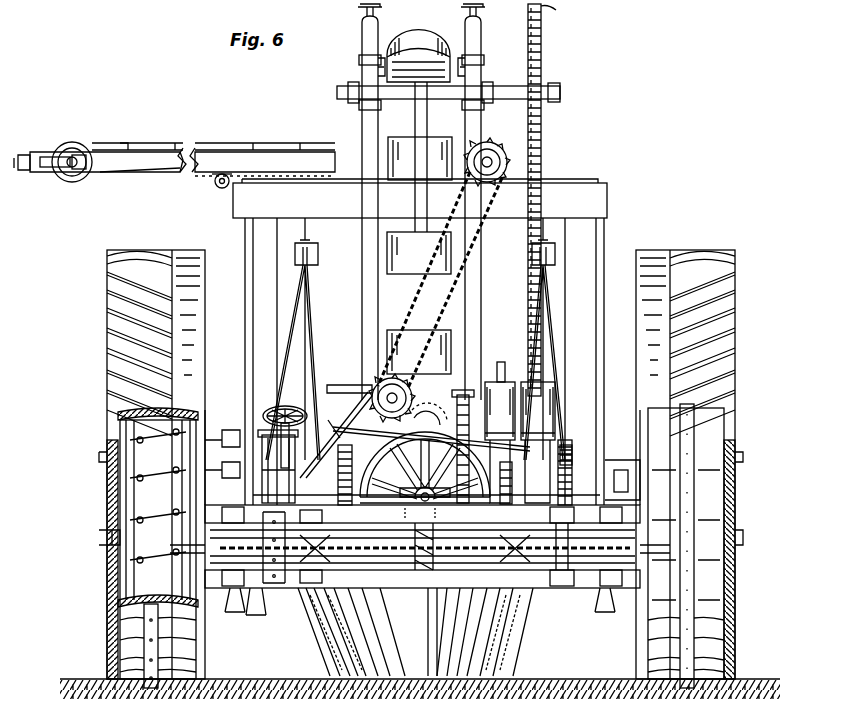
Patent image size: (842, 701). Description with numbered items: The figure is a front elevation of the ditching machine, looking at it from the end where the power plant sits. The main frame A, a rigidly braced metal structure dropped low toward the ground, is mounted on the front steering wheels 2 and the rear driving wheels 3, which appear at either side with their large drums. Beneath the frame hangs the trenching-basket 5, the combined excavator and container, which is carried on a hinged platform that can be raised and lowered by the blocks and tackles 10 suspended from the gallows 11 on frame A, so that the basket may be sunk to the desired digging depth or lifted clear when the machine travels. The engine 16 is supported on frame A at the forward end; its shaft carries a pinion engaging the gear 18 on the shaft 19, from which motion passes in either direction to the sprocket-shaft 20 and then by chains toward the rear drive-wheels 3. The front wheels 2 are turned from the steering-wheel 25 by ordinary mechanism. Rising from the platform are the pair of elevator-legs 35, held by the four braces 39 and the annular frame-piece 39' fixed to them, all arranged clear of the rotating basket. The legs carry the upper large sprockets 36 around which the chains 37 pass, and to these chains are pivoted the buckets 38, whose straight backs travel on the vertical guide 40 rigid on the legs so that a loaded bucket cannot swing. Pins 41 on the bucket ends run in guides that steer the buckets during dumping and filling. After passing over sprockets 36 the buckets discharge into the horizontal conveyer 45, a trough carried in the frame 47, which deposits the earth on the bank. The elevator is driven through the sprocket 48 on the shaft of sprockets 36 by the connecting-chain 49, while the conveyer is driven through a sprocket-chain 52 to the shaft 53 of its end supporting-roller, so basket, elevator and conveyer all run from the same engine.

The front steering wheels 2 is at (411, 546).
The rear driving wheels 3 is at (110, 618).
The trenching-basket 5 is at (415, 632).
The blocks and tackles 10 is at (308, 320).
The gallows 11 is at (420, 198).
The engine 16 is at (501, 378).
The gear 18 is at (568, 446).
The shaft 19 is at (552, 505).
The sprocket-shaft 20 is at (422, 482).
The steering-wheel 25 is at (256, 447).
The elevator-legs 35 is at (480, 322).
The upper large sprockets 36 is at (378, 62).
The chains 37 is at (363, 127).
The buckets 38 is at (428, 26).
The braces 39 is at (386, 398).
The annular frame-piece 39' is at (415, 413).
The vertical guide 40 is at (427, 125).
The pins 41 is at (387, 271).
The horizontal conveyer 45 is at (268, 143).
The frame 47 is at (212, 178).
The sprocket 48 is at (560, 14).
The connecting-chain 49 is at (541, 150).
The sprocket-chain 52 is at (476, 242).
The shaft 53 is at (492, 168).
The frame A is at (267, 606).